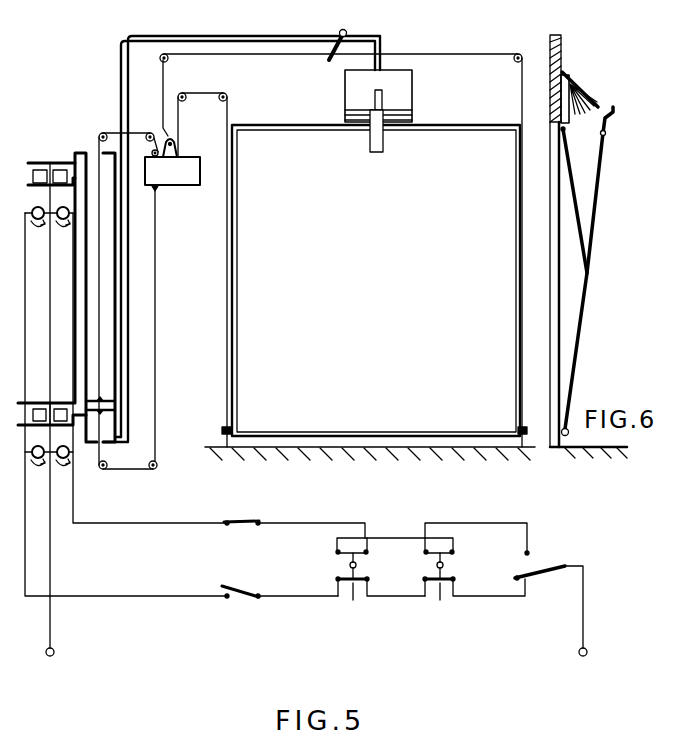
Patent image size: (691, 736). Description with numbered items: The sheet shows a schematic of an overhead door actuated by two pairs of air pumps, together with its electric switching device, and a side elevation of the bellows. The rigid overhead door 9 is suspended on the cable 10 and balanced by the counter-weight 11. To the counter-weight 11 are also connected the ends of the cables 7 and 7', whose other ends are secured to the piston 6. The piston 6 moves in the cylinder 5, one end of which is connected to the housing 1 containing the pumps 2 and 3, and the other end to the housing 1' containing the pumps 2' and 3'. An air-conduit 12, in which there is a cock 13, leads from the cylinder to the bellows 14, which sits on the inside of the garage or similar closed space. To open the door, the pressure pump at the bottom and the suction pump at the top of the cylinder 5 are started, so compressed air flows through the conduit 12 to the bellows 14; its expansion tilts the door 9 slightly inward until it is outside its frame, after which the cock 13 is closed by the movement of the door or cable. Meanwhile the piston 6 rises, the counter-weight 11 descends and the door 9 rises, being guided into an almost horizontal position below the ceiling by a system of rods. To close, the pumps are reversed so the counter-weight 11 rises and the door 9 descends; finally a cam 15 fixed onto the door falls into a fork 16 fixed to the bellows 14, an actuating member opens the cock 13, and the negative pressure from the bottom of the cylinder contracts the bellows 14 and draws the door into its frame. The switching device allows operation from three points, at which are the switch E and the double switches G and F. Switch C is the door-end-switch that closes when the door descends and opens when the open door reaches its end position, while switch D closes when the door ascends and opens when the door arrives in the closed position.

In FIG. 5, the housing 1 is at (47, 394).
In FIG. 5, the pump 2 is at (36, 157).
In FIG. 5, the pump 3 is at (58, 149).
In FIG. 5, the housing 1' is at (41, 388).
In FIG. 5, the pump 2' is at (36, 398).
In FIG. 5, the pump 3' is at (62, 393).
In FIG. 5, the cylinder 5 is at (80, 300).
In FIG. 5, the piston 6 is at (108, 404).
In FIG. 5, the cable 7 is at (141, 327).
In FIG. 5, the cable 7' is at (145, 299).
In FIG. 5, the overhead door 9 is at (419, 247).
In FIG. 5, the cable 10 is at (212, 96).
In FIG. 5, the counter-weight 11 is at (180, 181).
In FIG. 5, the air-conduit 12 is at (124, 90).
In FIG. 5, the cock 13 is at (355, 32).
In FIG. 5, the bellows 14 is at (398, 90).
In FIG. 6, the bellows 14 is at (573, 94).
In FIG. 6, the cam 15 is at (602, 126).
In FIG. 6, the fork 16 is at (597, 101).
In FIG. 5, the door-end-switch C is at (243, 524).
In FIG. 5, the door-end-switch D is at (240, 598).
In FIG. 5, the switch E is at (551, 567).
In FIG. 5, the double switch F is at (380, 582).
In FIG. 5, the double switch G is at (448, 574).